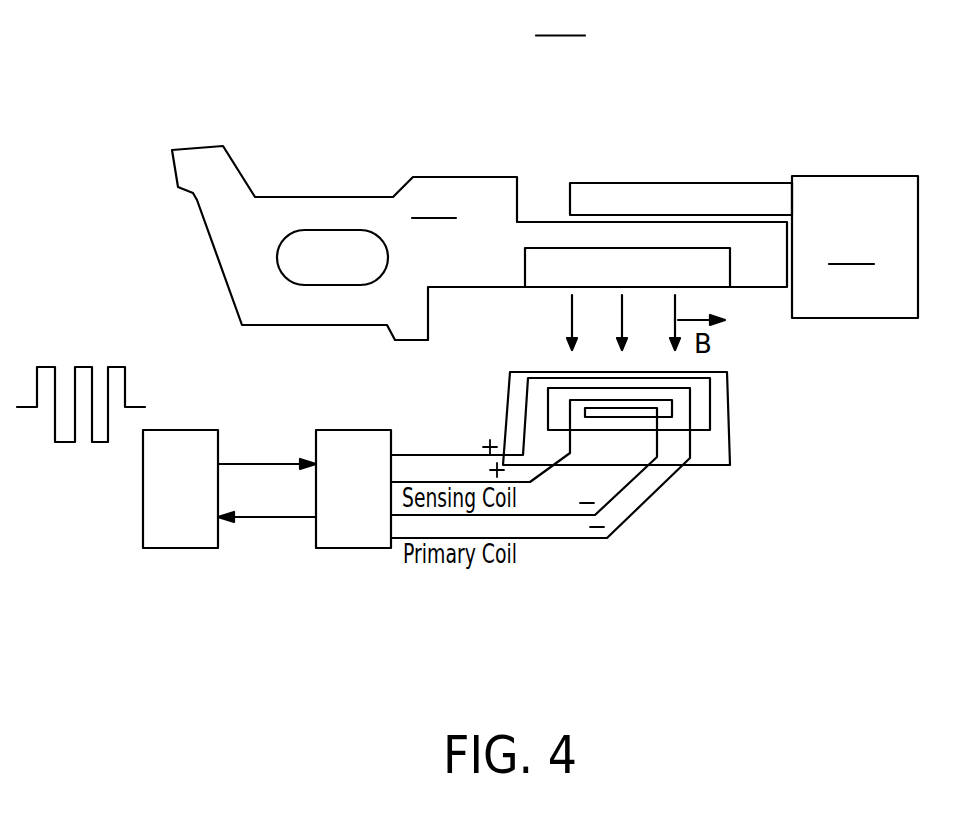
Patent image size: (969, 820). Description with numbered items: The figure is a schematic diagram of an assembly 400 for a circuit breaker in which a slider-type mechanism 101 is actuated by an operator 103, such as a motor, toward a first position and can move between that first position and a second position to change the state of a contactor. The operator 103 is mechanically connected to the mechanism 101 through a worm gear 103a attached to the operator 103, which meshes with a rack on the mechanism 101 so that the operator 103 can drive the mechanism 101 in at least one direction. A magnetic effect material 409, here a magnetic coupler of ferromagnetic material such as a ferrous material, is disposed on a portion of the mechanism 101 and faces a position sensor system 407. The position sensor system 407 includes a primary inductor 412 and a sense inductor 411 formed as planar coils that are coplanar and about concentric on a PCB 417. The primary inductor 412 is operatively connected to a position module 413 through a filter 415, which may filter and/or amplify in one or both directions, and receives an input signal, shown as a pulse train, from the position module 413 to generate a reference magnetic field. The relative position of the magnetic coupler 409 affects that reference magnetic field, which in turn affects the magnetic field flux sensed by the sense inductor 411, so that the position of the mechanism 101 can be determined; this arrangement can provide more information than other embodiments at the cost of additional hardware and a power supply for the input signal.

The assembly 400 is at (560, 21).
The mechanism 101 is at (479, 243).
The operator 103 is at (855, 247).
The worm gear 103a is at (688, 183).
The magnetic effect material 409 is at (538, 248).
The position sensor system 407 is at (646, 445).
The PCB 417 is at (505, 430).
The primary inductor 412 is at (710, 413).
The sense inductor 411 is at (657, 440).
The position module 413 is at (180, 548).
The filter 415 is at (352, 548).